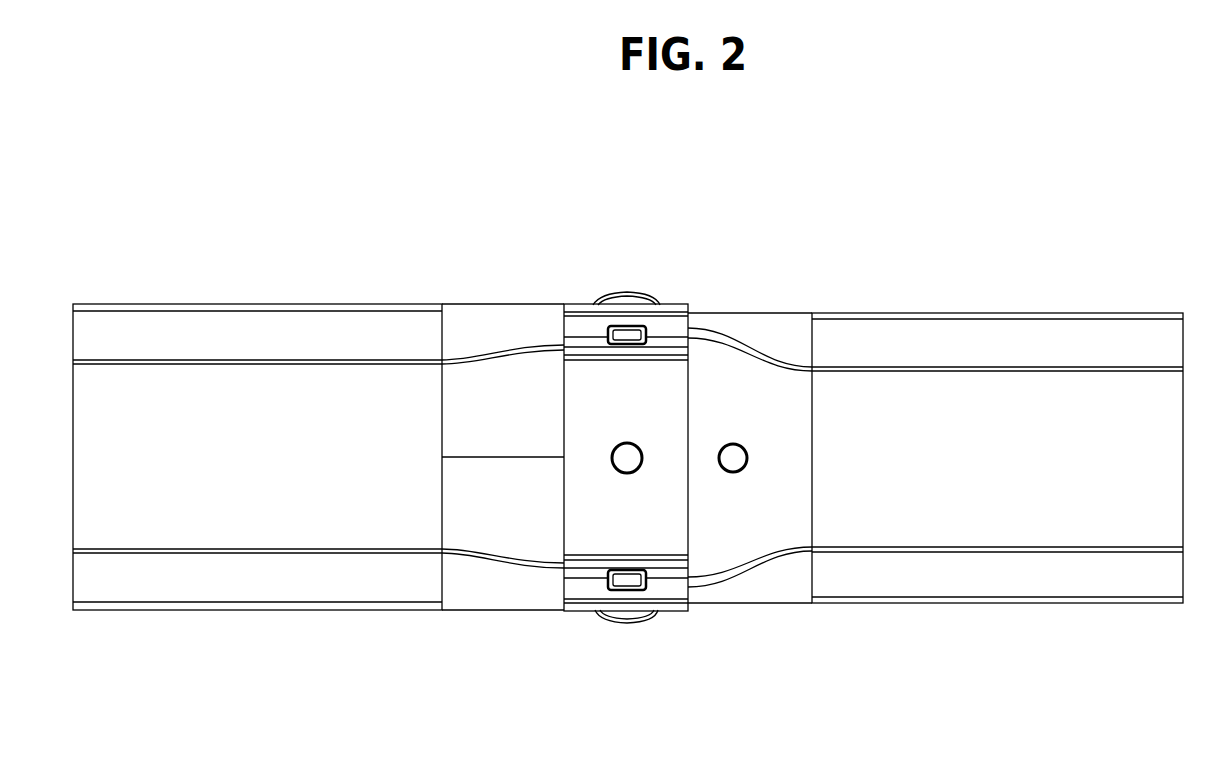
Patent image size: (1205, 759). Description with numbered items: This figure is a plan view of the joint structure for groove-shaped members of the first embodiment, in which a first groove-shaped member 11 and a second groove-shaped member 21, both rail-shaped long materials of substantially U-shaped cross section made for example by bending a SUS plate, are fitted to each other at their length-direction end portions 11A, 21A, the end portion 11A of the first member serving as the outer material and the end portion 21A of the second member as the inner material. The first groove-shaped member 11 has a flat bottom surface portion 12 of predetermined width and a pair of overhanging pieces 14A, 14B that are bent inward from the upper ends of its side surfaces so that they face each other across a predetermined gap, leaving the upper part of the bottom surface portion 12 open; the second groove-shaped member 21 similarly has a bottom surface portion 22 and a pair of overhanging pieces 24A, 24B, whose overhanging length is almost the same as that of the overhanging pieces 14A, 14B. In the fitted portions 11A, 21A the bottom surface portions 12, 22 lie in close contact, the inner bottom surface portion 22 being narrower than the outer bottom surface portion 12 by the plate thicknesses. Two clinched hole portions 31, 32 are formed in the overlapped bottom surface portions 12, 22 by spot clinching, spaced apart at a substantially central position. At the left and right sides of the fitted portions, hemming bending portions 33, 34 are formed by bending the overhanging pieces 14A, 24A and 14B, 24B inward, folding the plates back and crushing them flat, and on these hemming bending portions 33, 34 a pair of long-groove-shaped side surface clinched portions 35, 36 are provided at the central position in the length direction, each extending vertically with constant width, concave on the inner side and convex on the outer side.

The first groove-shaped member 11 is at (257, 516).
The bottom surface portion 12 is at (238, 468).
The overhanging piece 14A is at (257, 575).
The overhanging piece 14B is at (278, 348).
The end portion 11A is at (813, 643).
The second groove-shaped member 21 is at (997, 521).
The bottom surface portion 22 is at (993, 473).
The overhanging piece 24A is at (997, 572).
The overhanging piece 24B is at (1018, 359).
The end portion 21A is at (813, 267).
The clinched hole portion 31 is at (627, 447).
The clinched hole portion 32 is at (740, 441).
The hemming bending portion 33 is at (583, 588).
The hemming bending portion 34 is at (583, 323).
The side surface clinched portion 35 is at (627, 583).
The side surface clinched portion 36 is at (625, 333).